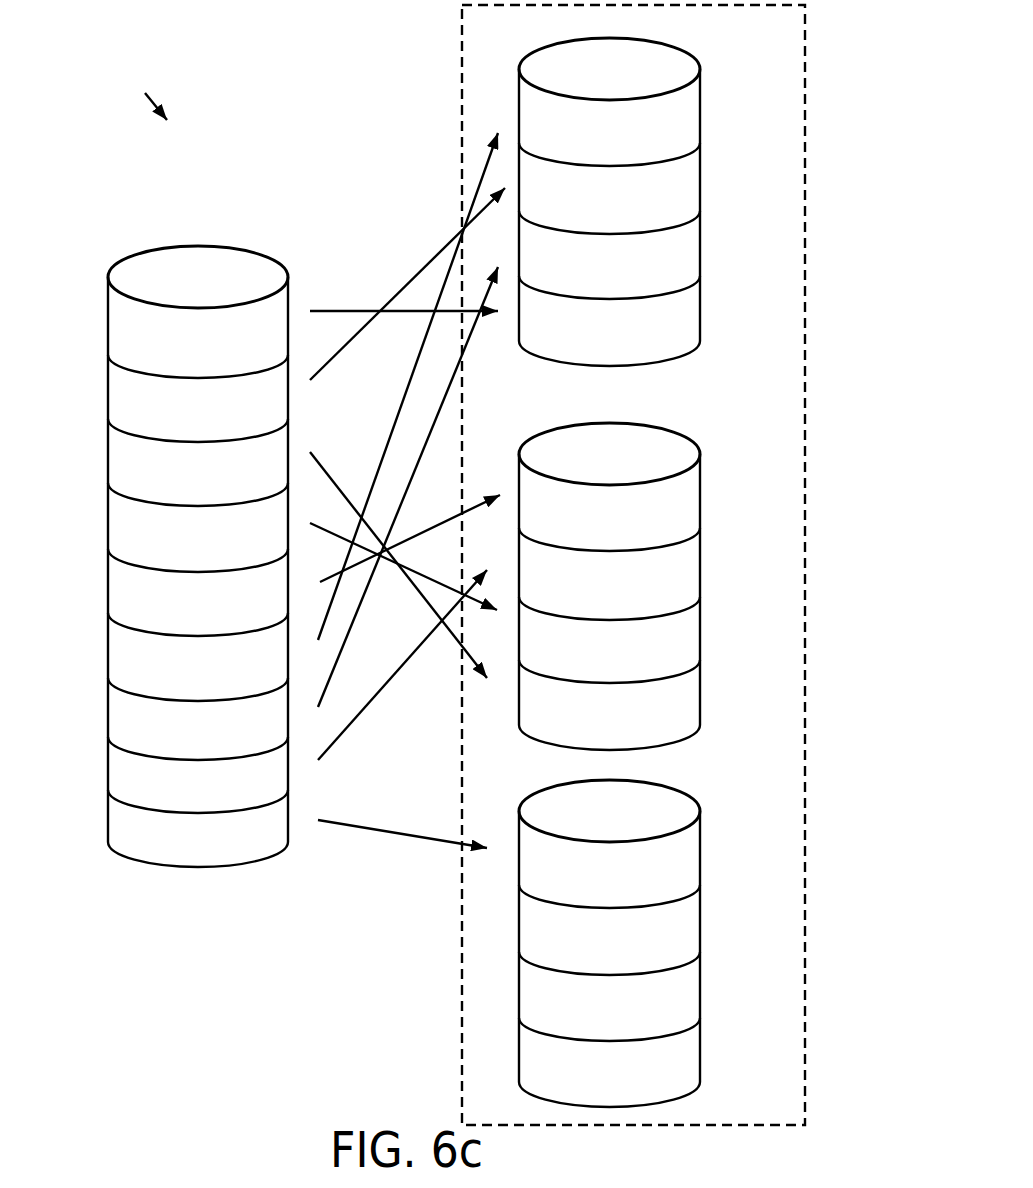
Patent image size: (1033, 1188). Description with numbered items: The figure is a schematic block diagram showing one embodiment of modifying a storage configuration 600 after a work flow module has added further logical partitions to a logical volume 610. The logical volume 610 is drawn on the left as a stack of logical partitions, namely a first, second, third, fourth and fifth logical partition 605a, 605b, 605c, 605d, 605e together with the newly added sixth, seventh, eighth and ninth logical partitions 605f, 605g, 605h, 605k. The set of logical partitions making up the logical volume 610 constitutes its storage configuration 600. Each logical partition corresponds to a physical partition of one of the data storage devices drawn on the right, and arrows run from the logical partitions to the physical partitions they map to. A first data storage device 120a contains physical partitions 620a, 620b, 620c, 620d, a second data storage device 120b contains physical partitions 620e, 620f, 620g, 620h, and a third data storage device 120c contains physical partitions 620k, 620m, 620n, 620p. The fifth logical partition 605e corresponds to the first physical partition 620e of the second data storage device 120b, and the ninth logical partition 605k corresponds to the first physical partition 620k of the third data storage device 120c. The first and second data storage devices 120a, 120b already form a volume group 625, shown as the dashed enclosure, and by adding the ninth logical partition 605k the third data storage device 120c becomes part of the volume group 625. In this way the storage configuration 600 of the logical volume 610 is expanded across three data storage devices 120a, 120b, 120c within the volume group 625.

The storage configuration 600 is at (137, 92).
The logical volume 610 is at (108, 263).
The first logical partition 605a is at (108, 318).
The second logical partition 605b is at (108, 389).
The third logical partition 605c is at (108, 451).
The fourth logical partition 605d is at (108, 524).
The fifth logical partition 605e is at (108, 593).
The sixth logical partition 605f is at (108, 654).
The seventh logical partition 605g is at (108, 716).
The eighth logical partition 605h is at (108, 768).
The ninth logical partition 605k is at (108, 821).
The first data storage device 120a is at (700, 51).
The second data storage device 120b is at (700, 438).
The third data storage device 120c is at (700, 795).
The physical partition 620a is at (700, 113).
The physical partition 620b is at (700, 186).
The physical partition 620c is at (700, 248).
The physical partition 620d is at (700, 321).
The first physical partition of second data storage device 620e is at (700, 498).
The physical partition 620f is at (700, 573).
The physical partition 620g is at (700, 635).
The physical partition 620h is at (700, 706).
The first physical partition of third data storage device 620k is at (700, 856).
The physical partition 620m is at (700, 931).
The physical partition 620n is at (700, 990).
The physical partition 620p is at (700, 1066).
The volume group 625 is at (806, 222).